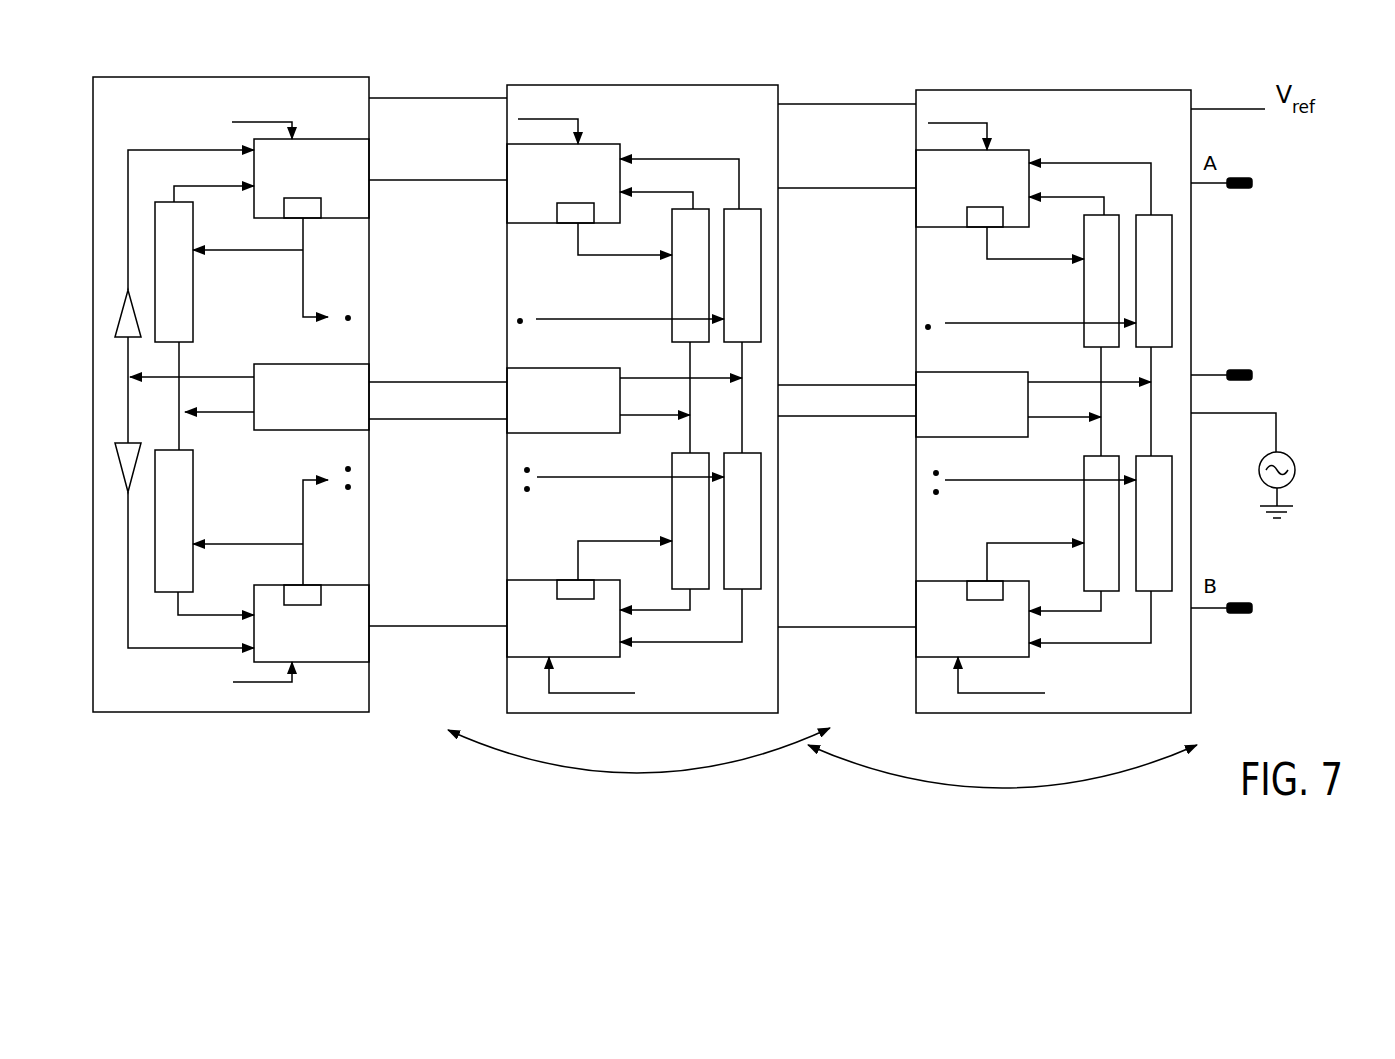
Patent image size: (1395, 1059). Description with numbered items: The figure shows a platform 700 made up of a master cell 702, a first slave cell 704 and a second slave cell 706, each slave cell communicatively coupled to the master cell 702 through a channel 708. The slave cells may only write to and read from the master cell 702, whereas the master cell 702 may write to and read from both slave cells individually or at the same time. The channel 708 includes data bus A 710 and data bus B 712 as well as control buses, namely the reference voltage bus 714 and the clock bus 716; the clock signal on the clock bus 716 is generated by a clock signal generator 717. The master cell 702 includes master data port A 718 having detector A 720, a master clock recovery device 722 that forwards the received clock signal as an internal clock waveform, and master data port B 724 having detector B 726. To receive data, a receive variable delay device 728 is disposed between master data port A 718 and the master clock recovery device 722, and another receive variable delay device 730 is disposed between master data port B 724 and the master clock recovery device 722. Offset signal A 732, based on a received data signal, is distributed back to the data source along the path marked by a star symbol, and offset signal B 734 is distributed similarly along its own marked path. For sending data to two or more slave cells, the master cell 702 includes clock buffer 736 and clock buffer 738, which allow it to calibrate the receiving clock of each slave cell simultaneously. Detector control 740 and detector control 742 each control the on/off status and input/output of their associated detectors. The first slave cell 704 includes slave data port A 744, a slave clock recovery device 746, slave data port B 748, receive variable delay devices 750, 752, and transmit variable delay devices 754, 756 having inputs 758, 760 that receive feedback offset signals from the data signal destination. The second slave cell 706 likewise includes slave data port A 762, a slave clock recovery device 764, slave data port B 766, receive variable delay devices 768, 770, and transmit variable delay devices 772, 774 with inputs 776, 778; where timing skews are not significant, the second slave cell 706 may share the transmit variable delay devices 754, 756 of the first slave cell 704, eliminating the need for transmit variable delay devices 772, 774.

The platform 700 is at (1036, 42).
The master cell 702 is at (302, 110).
The first slave cell 704 is at (706, 127).
The second slave cell 706 is at (1114, 132).
The channel 708 is at (830, 752).
The data bus A 710 is at (467, 179).
The data bus B 712 is at (467, 627).
The reference voltage bus 714 is at (467, 99).
The clock bus 716 is at (467, 420).
The clock signal generator 717 is at (1261, 483).
The master data port A 718 is at (321, 168).
The detector A 720 is at (321, 205).
The master clock recovery device 722 is at (296, 400).
The master data port B 724 is at (324, 649).
The detector B 726 is at (321, 593).
The receive variable delay device 728 is at (159, 274).
The receive variable delay device 730 is at (159, 527).
The offset signal A 732 is at (303, 240).
The offset signal B 734 is at (303, 548).
The clock buffer 736 is at (120, 320).
The clock buffer 738 is at (124, 464).
The detector control 740 is at (257, 122).
The detector control 742 is at (252, 684).
The slave data port A 744 is at (526, 173).
The slave clock recovery device 746 is at (526, 397).
The slave data port B 748 is at (534, 634).
The receive variable delay device 750 is at (675, 265).
The receive variable delay device 752 is at (675, 529).
The transmit variable delay device 754 is at (726, 265).
The transmit variable delay device 756 is at (726, 529).
The input 758 is at (586, 318).
The input 760 is at (586, 477).
The slave data port A 762 is at (935, 179).
The slave clock recovery device 764 is at (935, 402).
The slave data port B 766 is at (943, 635).
The receive variable delay device 768 is at (1086, 274).
The receive variable delay device 770 is at (1086, 530).
The transmit variable delay device 772 is at (1138, 274).
The transmit variable delay device 774 is at (1138, 530).
The input 776 is at (996, 323).
The input 778 is at (996, 480).